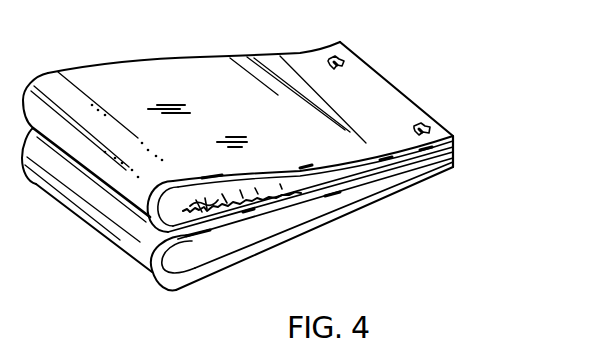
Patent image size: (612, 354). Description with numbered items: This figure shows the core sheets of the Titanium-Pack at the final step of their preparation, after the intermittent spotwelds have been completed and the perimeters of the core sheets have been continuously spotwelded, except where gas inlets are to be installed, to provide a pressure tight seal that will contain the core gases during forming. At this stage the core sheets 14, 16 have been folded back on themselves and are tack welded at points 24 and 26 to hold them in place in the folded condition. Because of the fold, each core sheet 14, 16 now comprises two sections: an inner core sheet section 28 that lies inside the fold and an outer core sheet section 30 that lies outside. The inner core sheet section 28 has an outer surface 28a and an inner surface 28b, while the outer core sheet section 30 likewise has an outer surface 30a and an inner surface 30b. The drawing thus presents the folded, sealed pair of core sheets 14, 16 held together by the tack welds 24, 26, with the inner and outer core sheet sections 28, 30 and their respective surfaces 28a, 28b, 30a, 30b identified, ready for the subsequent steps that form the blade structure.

The core sheet 14 is at (141, 61).
The core sheet 16 is at (127, 265).
The tack weld point 24 is at (341, 54).
The tack weld point 26 is at (424, 112).
The inner core sheet section 28 is at (383, 174).
The outer surface of inner core sheet section 28a is at (160, 288).
The inner surface of inner core sheet section 28b is at (140, 241).
The outer core sheet section 30 is at (197, 63).
The outer surface of outer core sheet section 30a is at (262, 252).
The inner surface of outer core sheet section 30b is at (233, 250).